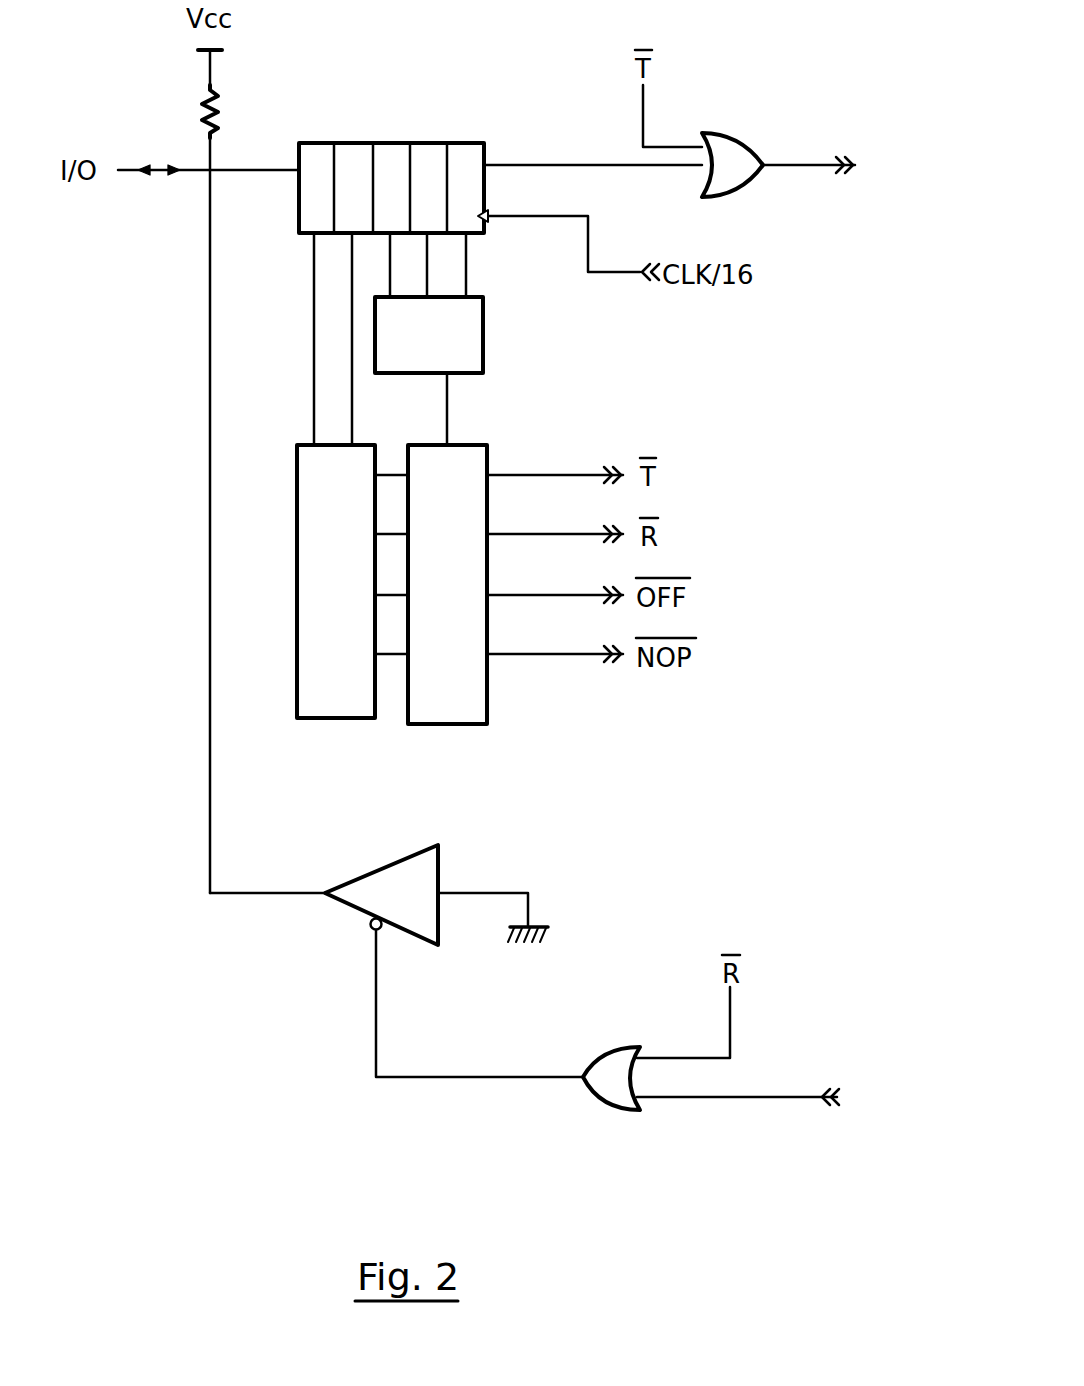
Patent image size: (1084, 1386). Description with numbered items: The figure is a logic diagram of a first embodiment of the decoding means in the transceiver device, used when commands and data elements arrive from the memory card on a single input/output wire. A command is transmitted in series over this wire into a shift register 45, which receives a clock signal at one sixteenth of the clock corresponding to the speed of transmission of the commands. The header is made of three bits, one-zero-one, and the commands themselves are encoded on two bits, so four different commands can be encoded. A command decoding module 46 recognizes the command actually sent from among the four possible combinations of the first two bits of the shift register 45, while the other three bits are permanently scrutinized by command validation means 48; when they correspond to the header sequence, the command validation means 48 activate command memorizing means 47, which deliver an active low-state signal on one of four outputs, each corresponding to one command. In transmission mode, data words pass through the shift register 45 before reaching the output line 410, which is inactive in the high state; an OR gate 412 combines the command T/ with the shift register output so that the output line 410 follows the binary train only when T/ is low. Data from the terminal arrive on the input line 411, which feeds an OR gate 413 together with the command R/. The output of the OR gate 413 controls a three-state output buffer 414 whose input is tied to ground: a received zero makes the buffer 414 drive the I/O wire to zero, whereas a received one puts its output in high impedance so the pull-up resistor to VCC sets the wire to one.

The shift register 45 is at (381, 143).
The decoder 46 is at (333, 700).
The command memorizing means 47 is at (462, 697).
The command validation means 48 is at (447, 332).
The output line (OUTPUT) 410 is at (795, 168).
The input line (INPUT) 411 is at (735, 1102).
The "OR" gate 412 is at (740, 155).
The "OR" gate 413 is at (607, 1080).
The three-state output buffer 414 is at (378, 897).